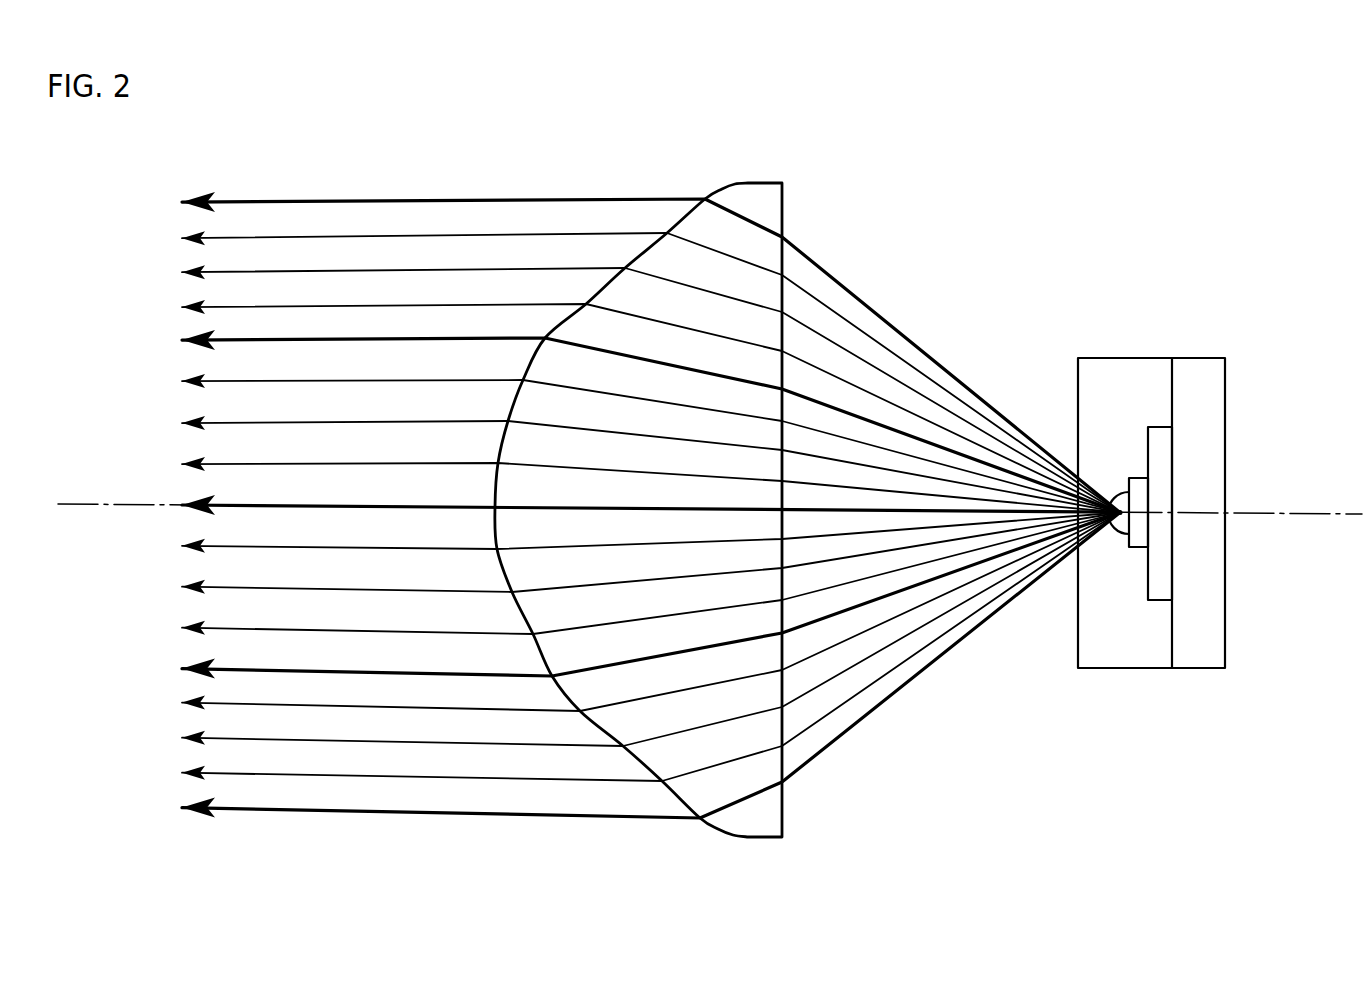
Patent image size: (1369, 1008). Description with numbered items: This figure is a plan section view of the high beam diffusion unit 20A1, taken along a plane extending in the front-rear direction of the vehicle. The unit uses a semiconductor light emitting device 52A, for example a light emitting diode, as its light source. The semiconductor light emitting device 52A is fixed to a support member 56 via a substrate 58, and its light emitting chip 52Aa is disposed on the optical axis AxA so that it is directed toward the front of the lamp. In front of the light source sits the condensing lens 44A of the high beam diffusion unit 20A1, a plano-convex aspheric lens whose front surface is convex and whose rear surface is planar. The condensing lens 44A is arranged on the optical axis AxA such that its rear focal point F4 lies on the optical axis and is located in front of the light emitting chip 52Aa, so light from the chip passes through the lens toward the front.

The high beam diffusion unit 20A1 is at (1170, 190).
The condensing lens 44A is at (733, 185).
The semiconductor light emitting device 52A is at (1122, 548).
The light emitting chip 52Aa is at (1122, 491).
The support member 56 is at (1226, 448).
The substrate 58 is at (1158, 570).
The rear focal point F4 is at (1096, 522).
The optical axis AxA is at (66, 503).